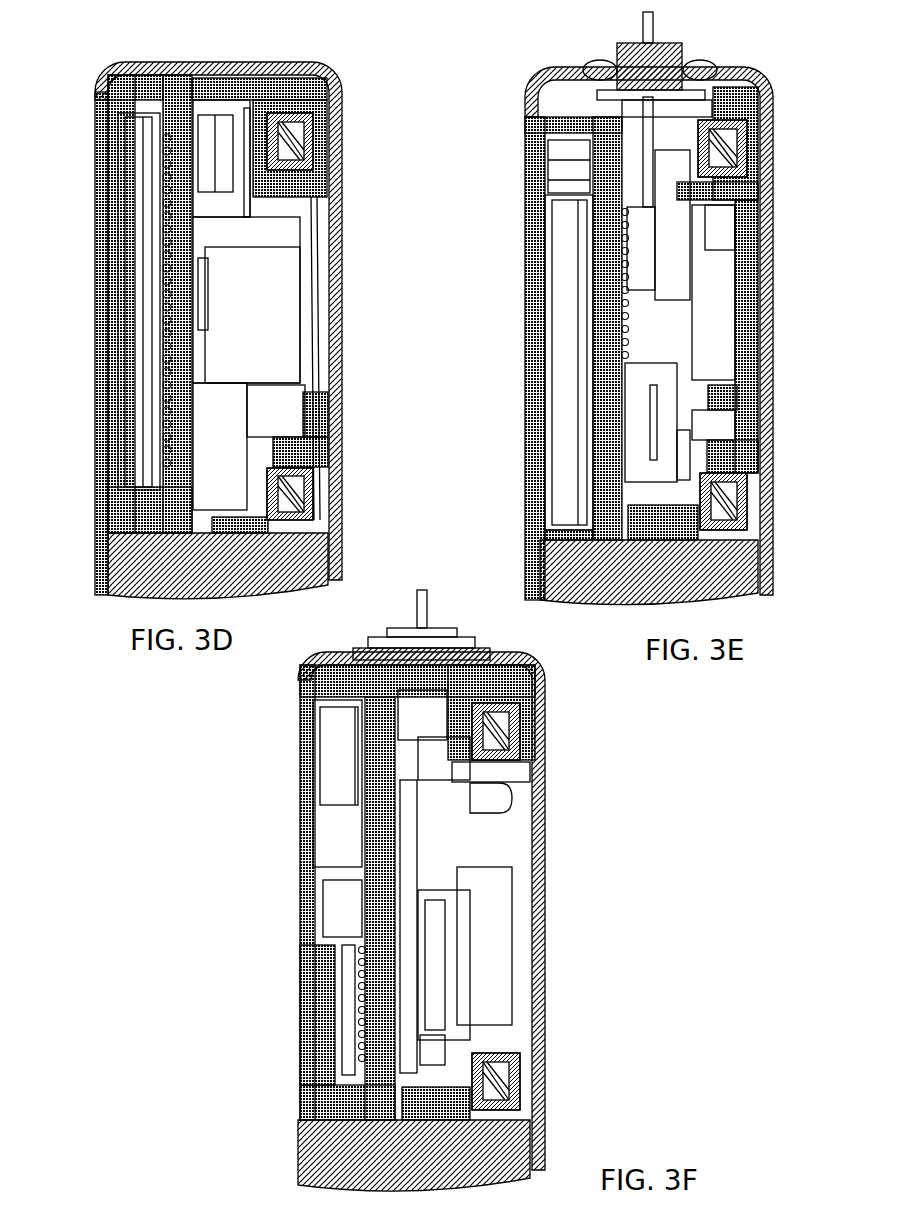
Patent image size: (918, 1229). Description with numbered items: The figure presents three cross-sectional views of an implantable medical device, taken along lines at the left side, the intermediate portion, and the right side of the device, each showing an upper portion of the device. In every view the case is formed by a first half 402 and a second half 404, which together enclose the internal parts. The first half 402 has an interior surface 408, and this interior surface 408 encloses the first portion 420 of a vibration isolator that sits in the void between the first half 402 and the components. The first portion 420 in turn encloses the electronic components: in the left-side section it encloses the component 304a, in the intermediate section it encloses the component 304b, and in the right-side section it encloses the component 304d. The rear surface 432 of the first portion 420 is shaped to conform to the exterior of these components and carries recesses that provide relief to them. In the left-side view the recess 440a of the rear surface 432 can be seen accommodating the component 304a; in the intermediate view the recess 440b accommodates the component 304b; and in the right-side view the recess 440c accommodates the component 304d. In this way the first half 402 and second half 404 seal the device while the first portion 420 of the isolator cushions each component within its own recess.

In FIG. 3D, the component 304a is at (128, 442).
In FIG. 3E, the component 304b is at (555, 465).
In FIG. 3F, the component 304d is at (300, 868).
In FIG. 3D, the first half 402 is at (95, 305).
In FIG. 3E, the first half 402 is at (525, 330).
In FIG. 3F, the first half 402 is at (300, 770).
In FIG. 3D, the second half 404 is at (345, 148).
In FIG. 3E, the second half 404 is at (773, 150).
In FIG. 3F, the second half 404 is at (545, 820).
In FIG. 3D, the interior surface 408 is at (95, 375).
In FIG. 3E, the interior surface 408 is at (525, 400).
In FIG. 3F, the interior surface 408 is at (300, 812).
In FIG. 3D, the first portion 420 is at (95, 150).
In FIG. 3E, the first portion 420 is at (525, 150).
In FIG. 3F, the first portion 420 is at (300, 920).
In FIG. 3D, the rear surface 432 is at (95, 188).
In FIG. 3E, the rear surface 432 is at (525, 208).
In FIG. 3F, the rear surface 432 is at (300, 995).
In FIG. 3D, the recess 440a is at (95, 225).
In FIG. 3E, the recess 440b is at (525, 250).
In FIG. 3F, the recess 440c is at (300, 835).